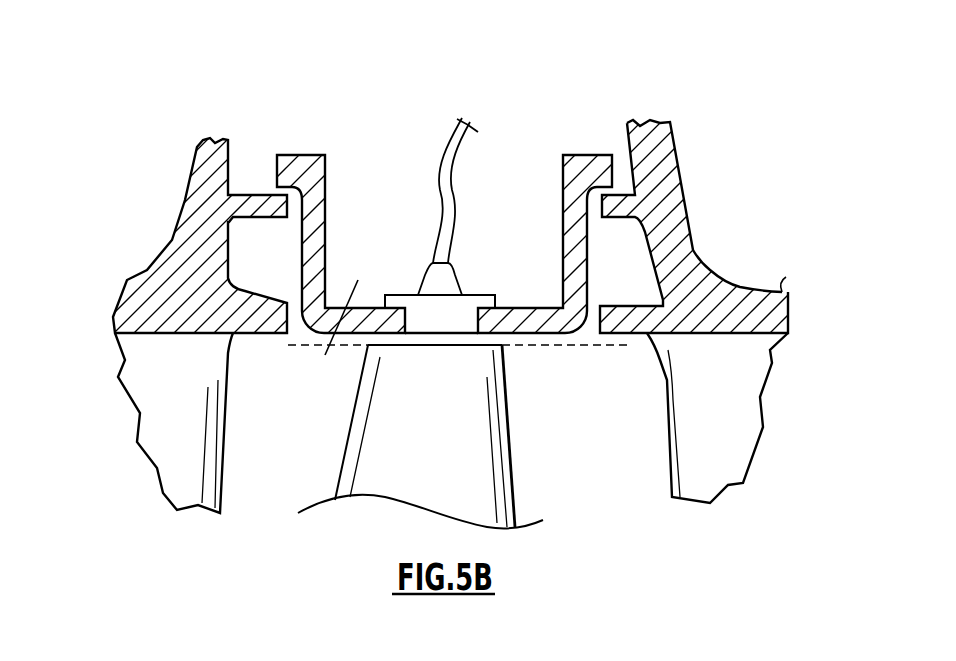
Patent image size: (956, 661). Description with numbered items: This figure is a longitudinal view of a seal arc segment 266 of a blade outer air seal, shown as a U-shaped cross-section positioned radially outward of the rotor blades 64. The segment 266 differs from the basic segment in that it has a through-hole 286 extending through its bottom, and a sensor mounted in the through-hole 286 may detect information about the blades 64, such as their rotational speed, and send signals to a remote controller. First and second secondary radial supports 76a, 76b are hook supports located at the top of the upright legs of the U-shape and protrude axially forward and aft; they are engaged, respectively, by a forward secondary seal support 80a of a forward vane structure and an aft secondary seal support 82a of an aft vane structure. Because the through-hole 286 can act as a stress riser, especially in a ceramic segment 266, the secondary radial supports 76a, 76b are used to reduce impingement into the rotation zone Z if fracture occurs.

The first secondary radial support 76a is at (286, 162).
The second secondary radial support 76b is at (598, 163).
The forward secondary seal support 80a is at (273, 226).
The aft secondary seal support 82a is at (645, 252).
The seal arc segment 266 is at (325, 252).
The through-hole 286 is at (477, 336).
The rotor blades 64 is at (510, 426).
The rotation zone Z is at (603, 345).